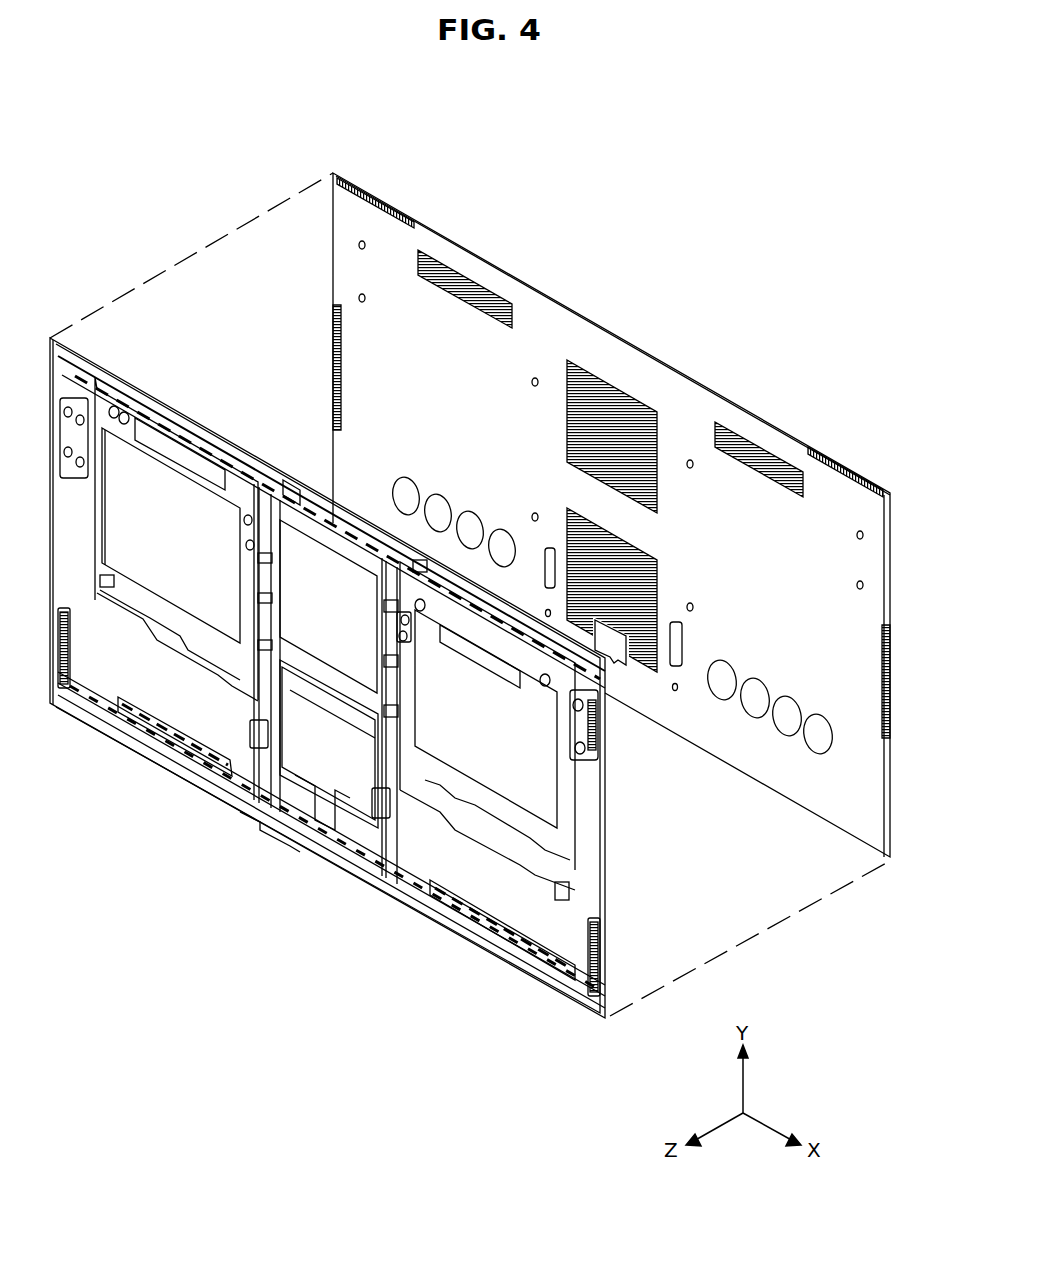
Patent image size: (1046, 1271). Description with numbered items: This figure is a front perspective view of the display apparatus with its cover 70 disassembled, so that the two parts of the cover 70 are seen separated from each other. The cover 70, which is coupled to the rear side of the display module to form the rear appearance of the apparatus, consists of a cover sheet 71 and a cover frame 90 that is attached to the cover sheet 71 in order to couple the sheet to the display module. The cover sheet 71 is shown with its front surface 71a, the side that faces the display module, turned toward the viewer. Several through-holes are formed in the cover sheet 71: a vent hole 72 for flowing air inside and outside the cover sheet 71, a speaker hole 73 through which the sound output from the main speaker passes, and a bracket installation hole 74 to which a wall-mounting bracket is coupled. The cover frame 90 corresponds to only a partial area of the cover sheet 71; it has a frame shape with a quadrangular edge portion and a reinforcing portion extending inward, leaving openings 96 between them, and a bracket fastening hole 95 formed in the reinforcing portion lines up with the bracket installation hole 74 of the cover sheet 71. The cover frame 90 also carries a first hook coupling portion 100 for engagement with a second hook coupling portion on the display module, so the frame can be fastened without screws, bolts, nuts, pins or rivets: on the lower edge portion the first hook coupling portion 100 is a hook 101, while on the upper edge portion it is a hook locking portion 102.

The cover 70 is at (568, 182).
The cover sheet 71 is at (365, 178).
The front surface 71a is at (868, 560).
The vent hole 72 is at (622, 390).
The speaker hole 73 is at (800, 720).
The bracket installation hole 74 is at (690, 460).
The cover frame 90 is at (83, 343).
The bracket fastening hole 95 is at (403, 638).
The openings 96 is at (305, 582).
The first hook coupling portion 100 is at (322, 512).
The hook 101 is at (248, 860).
The hook locking portion 102 is at (453, 522).